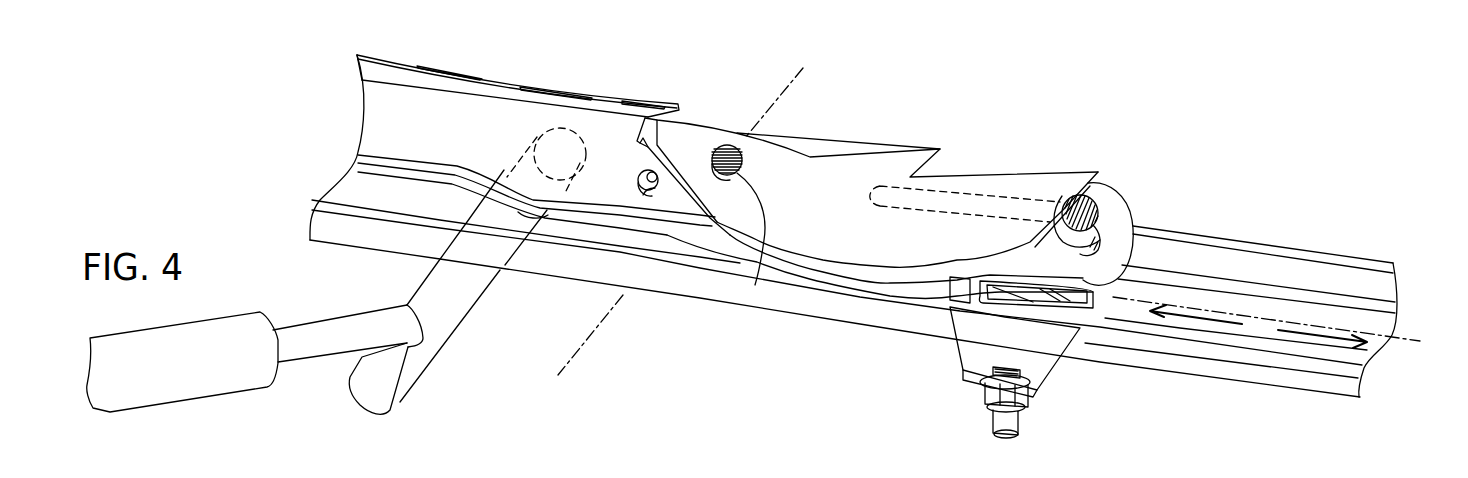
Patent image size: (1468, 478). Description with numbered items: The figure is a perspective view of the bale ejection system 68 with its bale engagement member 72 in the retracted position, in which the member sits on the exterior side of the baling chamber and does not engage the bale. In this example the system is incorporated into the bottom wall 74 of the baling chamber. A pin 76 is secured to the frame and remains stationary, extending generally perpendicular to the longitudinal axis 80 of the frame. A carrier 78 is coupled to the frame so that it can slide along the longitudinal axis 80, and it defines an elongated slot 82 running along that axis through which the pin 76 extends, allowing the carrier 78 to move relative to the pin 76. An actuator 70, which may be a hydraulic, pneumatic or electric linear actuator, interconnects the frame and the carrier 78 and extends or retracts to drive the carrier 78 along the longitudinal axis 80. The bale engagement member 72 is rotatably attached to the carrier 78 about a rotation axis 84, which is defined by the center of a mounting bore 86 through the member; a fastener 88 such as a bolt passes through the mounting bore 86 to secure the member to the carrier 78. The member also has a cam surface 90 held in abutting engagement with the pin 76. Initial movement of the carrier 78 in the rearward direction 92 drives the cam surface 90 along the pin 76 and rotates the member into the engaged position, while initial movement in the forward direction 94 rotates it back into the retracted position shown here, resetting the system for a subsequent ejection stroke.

The bale ejection system 68 is at (1063, 70).
The actuator 70 is at (205, 373).
The bale engagement member 72 is at (808, 197).
The bottom wall 74 is at (625, 92).
The pin 76 is at (1117, 192).
The carrier 78 is at (485, 128).
The longitudinal axis 80 is at (1423, 337).
The elongated slot 82 is at (1140, 265).
The rotation axis 84 is at (768, 113).
The mounting bore 86 is at (755, 285).
The fastener 88 is at (725, 145).
The cam surface 90 is at (910, 270).
The rearward direction 92 is at (1303, 335).
The forward direction 94 is at (1193, 320).